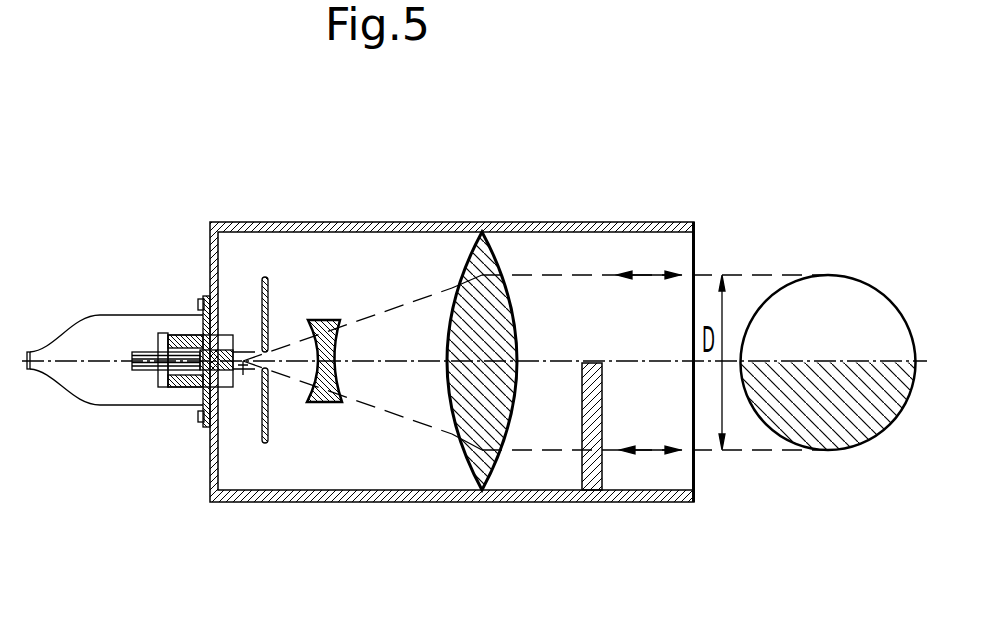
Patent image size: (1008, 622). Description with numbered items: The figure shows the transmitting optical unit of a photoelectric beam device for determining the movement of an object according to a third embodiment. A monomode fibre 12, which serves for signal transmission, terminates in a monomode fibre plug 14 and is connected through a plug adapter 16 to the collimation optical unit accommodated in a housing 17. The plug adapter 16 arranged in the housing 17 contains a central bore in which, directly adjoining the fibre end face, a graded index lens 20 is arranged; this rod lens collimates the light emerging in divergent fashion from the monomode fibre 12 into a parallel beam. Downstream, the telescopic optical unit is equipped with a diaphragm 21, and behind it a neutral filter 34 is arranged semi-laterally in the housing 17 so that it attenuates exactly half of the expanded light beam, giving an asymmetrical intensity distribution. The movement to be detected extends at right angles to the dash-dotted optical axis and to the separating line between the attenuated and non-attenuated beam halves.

The monomode fibre 12 is at (82, 358).
The monomode fibre plug 14 is at (133, 392).
The plug adapter 16 is at (226, 349).
The housing 17 is at (523, 502).
The graded index lens 20 is at (243, 375).
The diaphragm 21 is at (272, 310).
The filter 34 is at (608, 487).